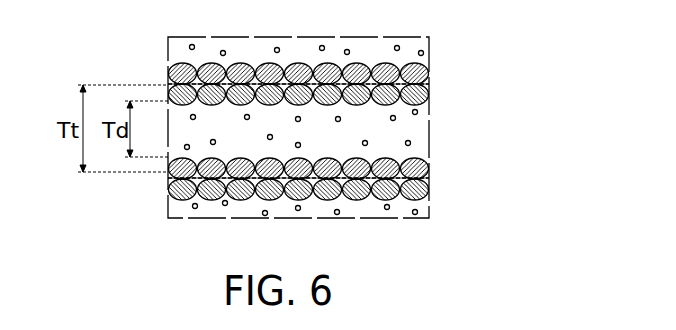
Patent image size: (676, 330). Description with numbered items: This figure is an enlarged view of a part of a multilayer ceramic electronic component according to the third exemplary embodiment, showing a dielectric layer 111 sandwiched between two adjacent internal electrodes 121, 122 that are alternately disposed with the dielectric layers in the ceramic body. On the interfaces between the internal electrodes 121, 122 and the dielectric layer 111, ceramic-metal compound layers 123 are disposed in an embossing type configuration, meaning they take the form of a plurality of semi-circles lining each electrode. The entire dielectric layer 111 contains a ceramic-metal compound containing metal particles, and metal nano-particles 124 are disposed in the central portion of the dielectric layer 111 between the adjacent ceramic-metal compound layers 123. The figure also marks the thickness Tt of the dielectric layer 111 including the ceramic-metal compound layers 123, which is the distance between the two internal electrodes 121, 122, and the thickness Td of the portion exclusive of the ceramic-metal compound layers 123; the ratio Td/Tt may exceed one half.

The dielectric layer 111 is at (421, 127).
The internal electrode 121 is at (430, 84).
The internal electrode 122 is at (430, 180).
The ceramic-metal compound layer 123 is at (428, 100).
The metal nano-particle 124 is at (424, 53).